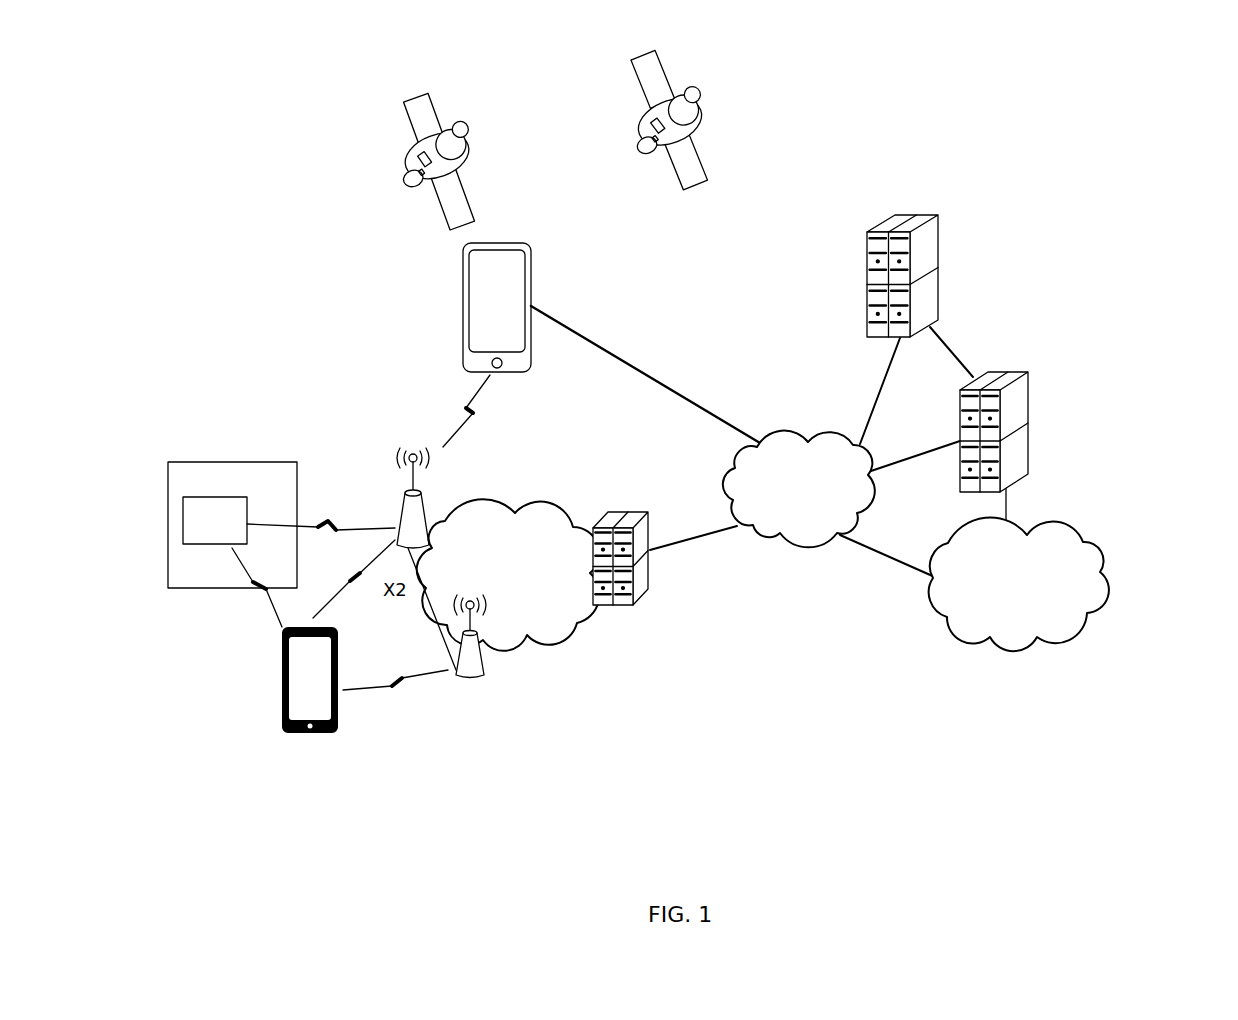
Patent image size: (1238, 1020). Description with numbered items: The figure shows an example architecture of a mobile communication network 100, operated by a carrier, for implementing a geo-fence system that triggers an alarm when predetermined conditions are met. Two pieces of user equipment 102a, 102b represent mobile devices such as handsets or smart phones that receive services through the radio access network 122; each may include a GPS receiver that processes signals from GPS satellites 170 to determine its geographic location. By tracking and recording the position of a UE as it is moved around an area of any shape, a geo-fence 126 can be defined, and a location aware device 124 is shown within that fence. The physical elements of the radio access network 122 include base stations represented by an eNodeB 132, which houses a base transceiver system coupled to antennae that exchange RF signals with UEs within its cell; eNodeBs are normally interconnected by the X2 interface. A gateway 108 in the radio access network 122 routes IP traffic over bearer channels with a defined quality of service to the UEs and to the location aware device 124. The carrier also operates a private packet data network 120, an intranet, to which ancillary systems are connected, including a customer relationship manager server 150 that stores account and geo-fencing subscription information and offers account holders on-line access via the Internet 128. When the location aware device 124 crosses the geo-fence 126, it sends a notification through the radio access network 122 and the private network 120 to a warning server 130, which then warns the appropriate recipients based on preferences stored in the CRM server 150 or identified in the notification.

The mobile communication network 100 is at (230, 88).
The GPS satellite 170 is at (642, 152).
The user equipment 102a is at (464, 287).
The geo-fence 126 is at (228, 462).
The location aware device 124 is at (247, 497).
The radio access network 122 is at (483, 497).
The gateway 108 is at (627, 548).
The eNodeB 132 is at (484, 660).
The private IP type packet data network 120 is at (872, 508).
The customer relationship manager server 150 is at (937, 237).
The warning server 130 is at (1027, 433).
The Internet 128 is at (1080, 530).
The user equipment 102b is at (250, 680).